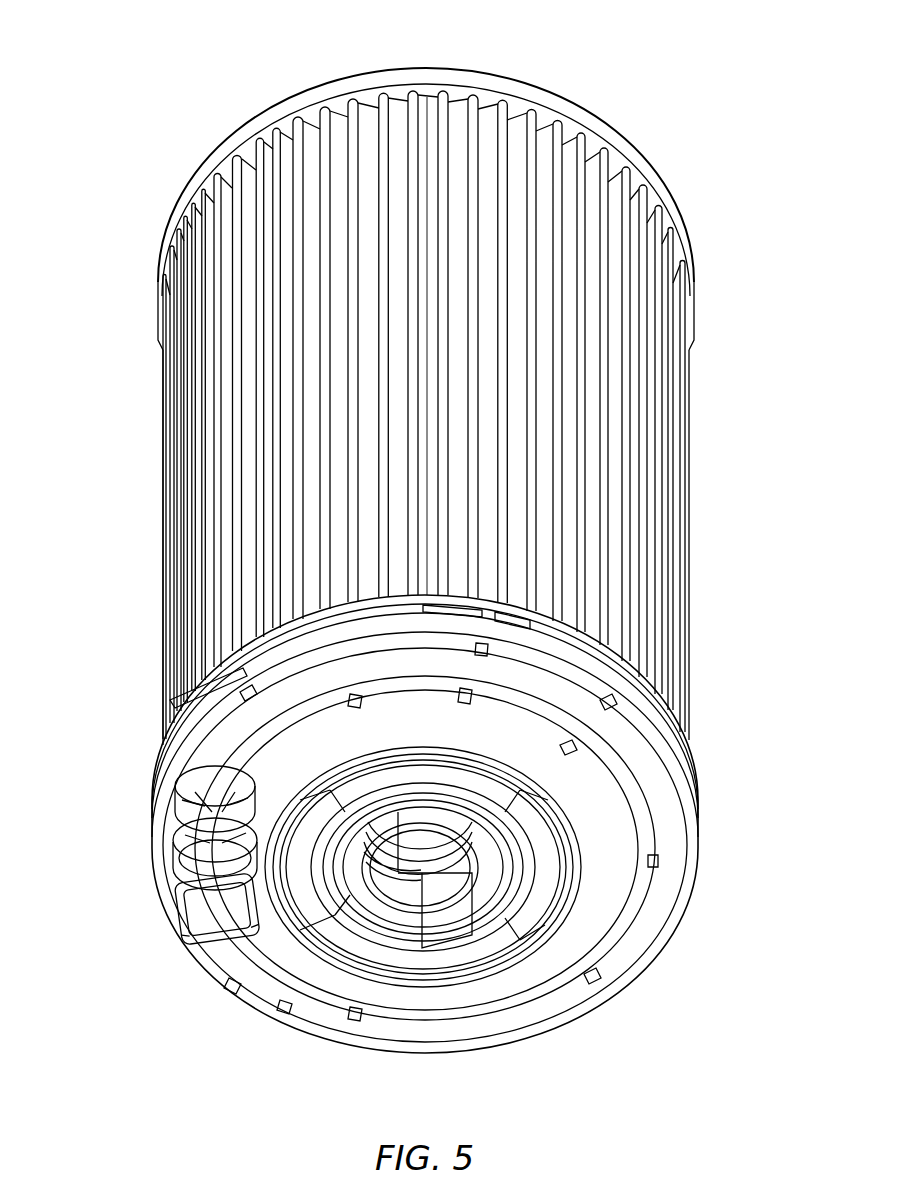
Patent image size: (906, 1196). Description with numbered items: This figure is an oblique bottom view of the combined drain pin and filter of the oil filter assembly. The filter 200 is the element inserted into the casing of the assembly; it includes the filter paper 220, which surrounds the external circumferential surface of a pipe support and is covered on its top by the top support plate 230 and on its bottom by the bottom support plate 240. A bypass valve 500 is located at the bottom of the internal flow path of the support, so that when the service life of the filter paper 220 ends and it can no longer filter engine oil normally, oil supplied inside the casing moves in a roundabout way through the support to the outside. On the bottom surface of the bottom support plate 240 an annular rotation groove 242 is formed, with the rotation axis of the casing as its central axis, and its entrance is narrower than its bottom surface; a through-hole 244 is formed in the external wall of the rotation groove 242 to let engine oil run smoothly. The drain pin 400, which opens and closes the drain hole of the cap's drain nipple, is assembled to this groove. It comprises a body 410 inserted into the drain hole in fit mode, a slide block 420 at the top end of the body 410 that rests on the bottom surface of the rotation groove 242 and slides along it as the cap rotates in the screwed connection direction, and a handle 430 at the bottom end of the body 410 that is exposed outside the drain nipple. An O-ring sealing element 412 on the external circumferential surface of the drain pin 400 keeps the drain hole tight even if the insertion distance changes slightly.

The filter 200 is at (660, 66).
The top support plate 230 is at (648, 168).
The filter paper 220 is at (668, 441).
The through-hole 244 is at (616, 662).
The bottom support plate 240 is at (680, 838).
The rotation groove 242 is at (618, 924).
The bypass valve 500 is at (437, 912).
The drain pin 400 is at (143, 839).
The slide block 420 is at (178, 768).
The sealing element 412 is at (186, 832).
The body 410 is at (190, 856).
The handle 430 is at (180, 905).